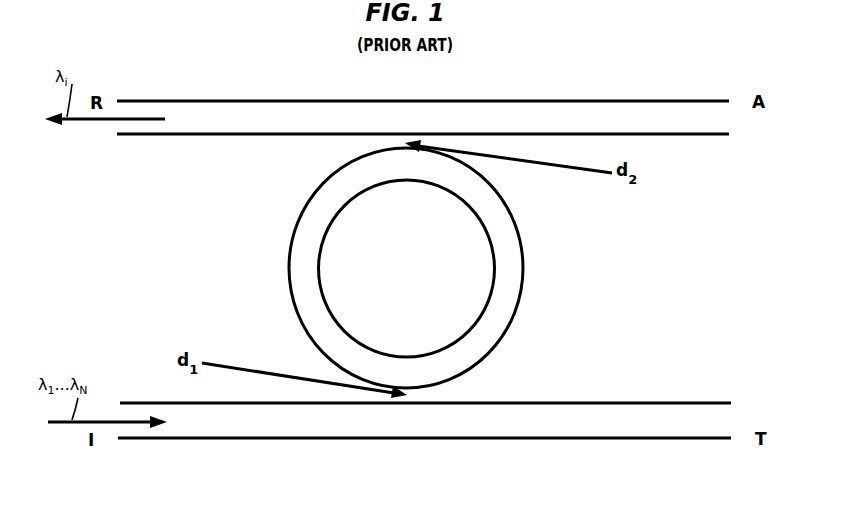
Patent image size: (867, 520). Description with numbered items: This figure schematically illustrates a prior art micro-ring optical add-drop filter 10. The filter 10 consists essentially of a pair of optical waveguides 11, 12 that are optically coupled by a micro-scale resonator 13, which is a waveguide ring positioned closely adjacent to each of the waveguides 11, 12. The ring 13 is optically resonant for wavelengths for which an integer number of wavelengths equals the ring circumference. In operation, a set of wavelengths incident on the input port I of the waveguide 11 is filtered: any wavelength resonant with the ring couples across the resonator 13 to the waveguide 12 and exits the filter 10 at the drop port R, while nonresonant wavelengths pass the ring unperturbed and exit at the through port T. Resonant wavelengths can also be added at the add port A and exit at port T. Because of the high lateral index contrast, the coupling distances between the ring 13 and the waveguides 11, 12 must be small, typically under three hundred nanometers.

The micro-ring optical add-drop filter 10 is at (424, 274).
The optical waveguide 11 is at (272, 440).
The optical waveguide 12 is at (251, 100).
The micro-scale resonator 13 is at (523, 272).